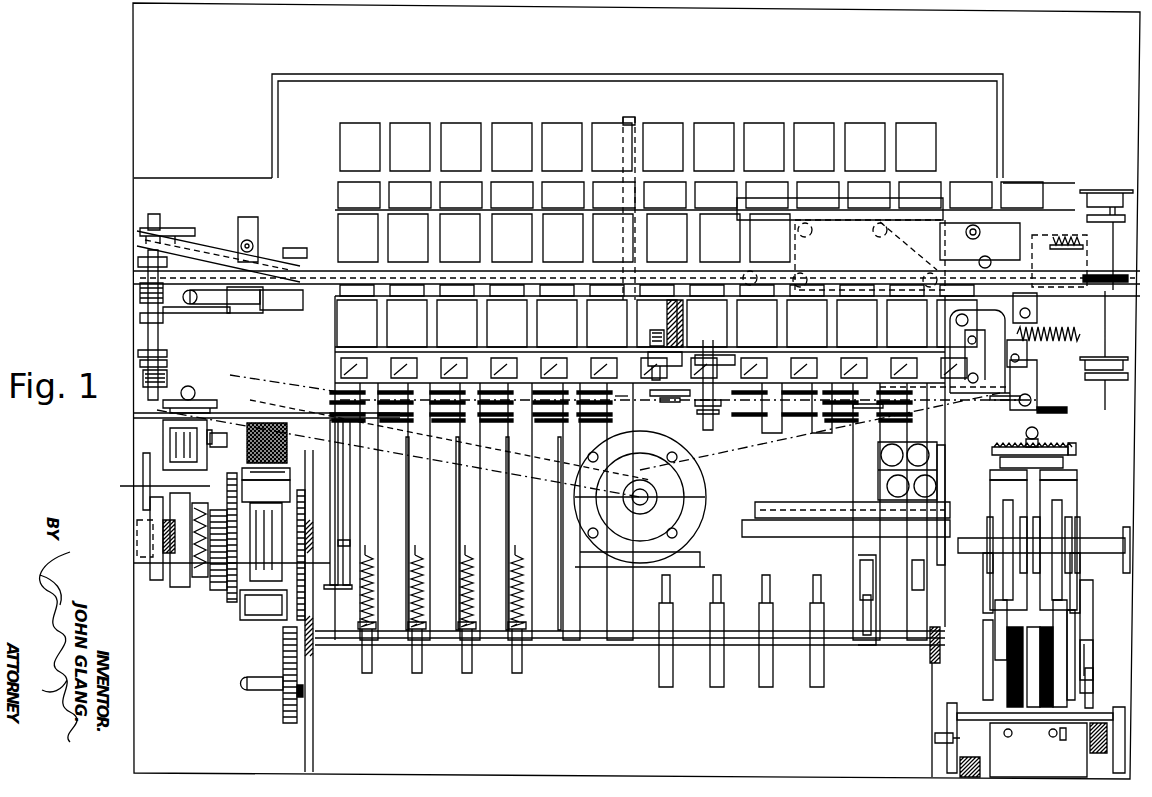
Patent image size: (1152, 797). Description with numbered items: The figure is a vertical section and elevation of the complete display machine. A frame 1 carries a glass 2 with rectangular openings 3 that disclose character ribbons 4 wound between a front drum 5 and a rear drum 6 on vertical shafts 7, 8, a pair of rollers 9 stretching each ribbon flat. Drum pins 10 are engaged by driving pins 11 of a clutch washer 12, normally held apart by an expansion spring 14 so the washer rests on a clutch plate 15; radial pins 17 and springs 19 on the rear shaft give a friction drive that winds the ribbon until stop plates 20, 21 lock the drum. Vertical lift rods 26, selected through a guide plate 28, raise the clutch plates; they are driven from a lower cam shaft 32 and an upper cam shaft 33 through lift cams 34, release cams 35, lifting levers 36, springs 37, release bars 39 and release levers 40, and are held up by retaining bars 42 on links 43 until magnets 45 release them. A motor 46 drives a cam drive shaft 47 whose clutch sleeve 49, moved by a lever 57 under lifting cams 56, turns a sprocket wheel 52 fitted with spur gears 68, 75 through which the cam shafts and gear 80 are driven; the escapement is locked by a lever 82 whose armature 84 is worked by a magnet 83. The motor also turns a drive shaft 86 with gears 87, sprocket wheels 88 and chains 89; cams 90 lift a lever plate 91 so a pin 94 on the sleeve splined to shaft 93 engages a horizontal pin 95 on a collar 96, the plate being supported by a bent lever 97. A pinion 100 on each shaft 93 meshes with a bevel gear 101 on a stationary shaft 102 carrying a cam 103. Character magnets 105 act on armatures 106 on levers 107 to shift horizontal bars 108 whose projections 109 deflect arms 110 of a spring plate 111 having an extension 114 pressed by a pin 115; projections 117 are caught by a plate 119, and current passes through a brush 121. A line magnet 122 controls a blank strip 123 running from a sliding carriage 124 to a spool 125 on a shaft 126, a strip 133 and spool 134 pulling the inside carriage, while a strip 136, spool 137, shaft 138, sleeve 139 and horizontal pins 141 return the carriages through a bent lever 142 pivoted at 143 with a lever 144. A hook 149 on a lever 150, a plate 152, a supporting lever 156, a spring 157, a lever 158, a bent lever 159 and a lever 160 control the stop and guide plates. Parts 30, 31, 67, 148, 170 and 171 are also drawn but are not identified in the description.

The frame 1 is at (636, 391).
The glass 2 is at (460, 88).
The rectangular openings 3 is at (340, 130).
The character ribbons 4 is at (338, 226).
The front drum 5 is at (657, 323).
The rear drum 6 is at (807, 323).
The vertical shaft 7 is at (714, 390).
The rear vertical shaft 8 is at (910, 346).
The rollers 9 is at (440, 322).
The downwardly projecting pins 10 is at (678, 345).
The horizontal driving pins 11 is at (716, 360).
The clutch washer 12 is at (662, 368).
The expansion spring 14 is at (655, 336).
The clutch plate 15 is at (690, 390).
The radial pins 17 is at (960, 322).
The springs 19 is at (887, 350).
The front stop plate 20 is at (335, 262).
The stop plate 21 is at (797, 342).
The vertical lift rods 26 is at (636, 118).
The guide plate 28 is at (630, 392).
The stop 30 is at (875, 396).
The stop 31 is at (1000, 396).
The lower cam shaft 32 is at (330, 640).
The upper cam shaft 33 is at (962, 540).
The lift cams 34 is at (370, 675).
The release cams 35 is at (349, 585).
The lifting levers 36 is at (372, 560).
The springs 37 is at (362, 612).
The release bars 39 is at (392, 520).
The release levers 40 is at (336, 545).
The horizontal retaining bars 42 is at (840, 510).
The links 43 is at (940, 458).
The magnets 45 is at (878, 458).
The motor 46 is at (692, 482).
The cam drive shaft 47 is at (190, 386).
The clutch sleeve 49 is at (160, 486).
The enlarged sprocket wheel 52 is at (180, 590).
The lifting cams 56 is at (156, 582).
The lever 57 is at (233, 450).
The lever 67 is at (213, 437).
The spur gear 68 is at (222, 580).
The spur gear 75 is at (306, 500).
The gear 80 is at (304, 692).
The lever 82 is at (290, 485).
The magnet 83 is at (287, 440).
The armature 84 is at (290, 468).
The drive shaft 86 is at (1000, 470).
The gears 87 is at (1000, 452).
The sprocket wheels 88 is at (340, 397).
The chains 89 is at (400, 438).
The cams 90 is at (988, 560).
The lever plate 91 is at (990, 510).
The shaft 93 is at (1040, 437).
The pin 94 is at (1068, 488).
The horizontal pin 95 is at (990, 484).
The collar 96 is at (1062, 480).
The bent lever 97 is at (990, 612).
The pinion 100 is at (985, 585).
The bevel gear 101 is at (985, 632).
The stationary shaft 102 is at (1080, 645).
The cam 103 is at (983, 660).
The character magnets 105 is at (982, 765).
The armatures 106 is at (1113, 705).
The levers 107 is at (983, 676).
The horizontal bars 108 is at (968, 713).
The projection 109 is at (1080, 672).
The arms 110 is at (1020, 725).
The spring plate 111 is at (1080, 600).
The extension 114 is at (1080, 585).
The pin 115 is at (1063, 525).
The projection 117 is at (1080, 612).
The plate 119 is at (1080, 628).
The brush 121 is at (1063, 740).
The line operating magnet 122 is at (143, 322).
The blank strip 123 is at (945, 210).
The sliding carriage 124 is at (905, 232).
The spool 125 is at (1037, 382).
The shaft 126 is at (1070, 447).
The strip 133 is at (1037, 310).
The spool 134 is at (1087, 192).
The strip 136 is at (375, 275).
The spool 137 is at (138, 262).
The shaft 138 is at (180, 196).
The sleeve 139 is at (190, 230).
The horizontal pins 141 is at (140, 292).
The bent lever 142 is at (245, 265).
The pivot 143 is at (252, 230).
The lever 144 is at (252, 246).
The bracket 148 is at (293, 312).
The hook 149 is at (1080, 334).
The lever 150 is at (200, 313).
The plate 152 is at (240, 313).
The supporting lever 156 is at (210, 240).
The spring 157 is at (1087, 240).
The lever 158 is at (1060, 270).
The bent lever 159 is at (1030, 405).
The lever 160 is at (960, 338).
The rack 170 is at (283, 645).
The rod 171 is at (283, 700).